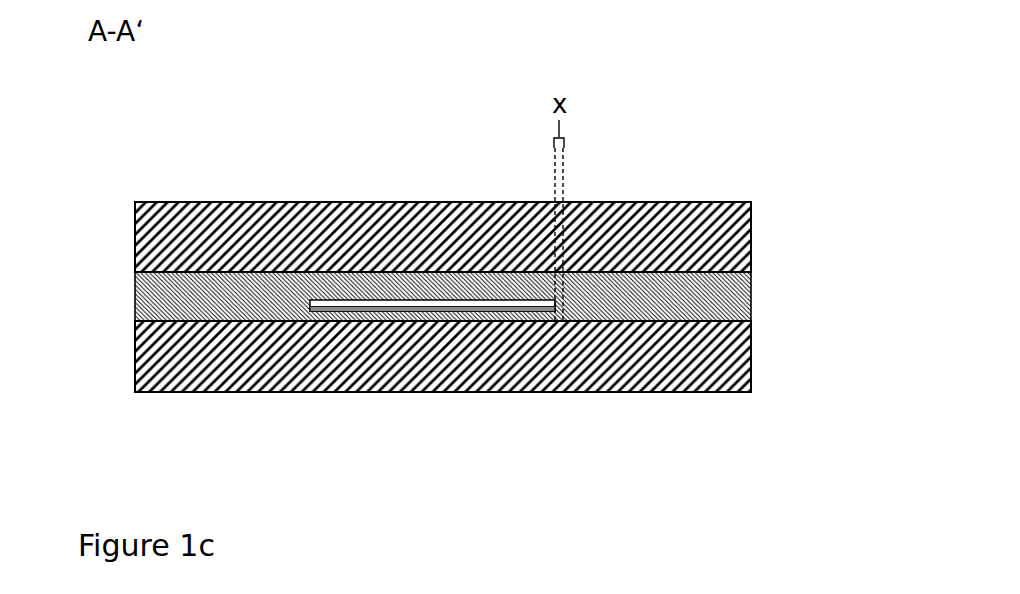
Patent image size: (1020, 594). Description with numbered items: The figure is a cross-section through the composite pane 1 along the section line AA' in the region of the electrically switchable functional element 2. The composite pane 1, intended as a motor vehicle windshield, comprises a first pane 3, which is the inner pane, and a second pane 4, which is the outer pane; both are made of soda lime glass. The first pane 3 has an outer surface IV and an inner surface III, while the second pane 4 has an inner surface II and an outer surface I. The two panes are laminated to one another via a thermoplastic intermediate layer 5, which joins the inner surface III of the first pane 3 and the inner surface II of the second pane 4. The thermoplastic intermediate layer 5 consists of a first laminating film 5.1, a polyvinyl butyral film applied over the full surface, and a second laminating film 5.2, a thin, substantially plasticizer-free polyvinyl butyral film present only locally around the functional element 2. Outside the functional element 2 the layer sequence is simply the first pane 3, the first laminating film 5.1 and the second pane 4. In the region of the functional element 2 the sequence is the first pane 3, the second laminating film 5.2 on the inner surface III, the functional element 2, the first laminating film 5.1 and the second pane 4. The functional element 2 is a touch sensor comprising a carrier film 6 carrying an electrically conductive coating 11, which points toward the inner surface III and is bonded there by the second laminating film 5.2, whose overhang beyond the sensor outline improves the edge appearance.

The composite pane 1 is at (459, 297).
The functional element 2 is at (428, 192).
The first pane 3 is at (715, 327).
The second pane 4 is at (715, 238).
The thermoplastic intermediate layer 5 is at (430, 281).
The first laminating film 5.1 is at (148, 278).
The second laminating film 5.2 is at (308, 309).
The carrier film 6 is at (380, 293).
The electrically conductive coating 11 is at (353, 302).
The outer surface of the second pane I is at (235, 190).
The inner surface of the second pane II is at (211, 259).
The inner surface of the first pane III is at (242, 318).
The outer surface of the first pane IV is at (247, 388).